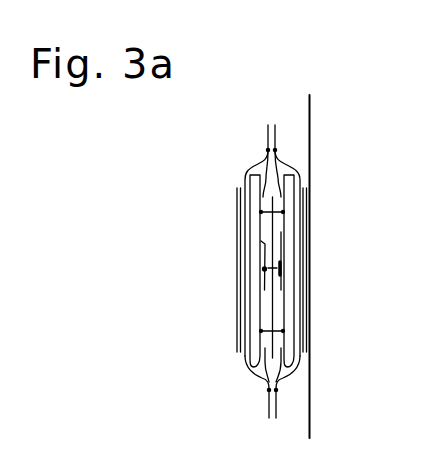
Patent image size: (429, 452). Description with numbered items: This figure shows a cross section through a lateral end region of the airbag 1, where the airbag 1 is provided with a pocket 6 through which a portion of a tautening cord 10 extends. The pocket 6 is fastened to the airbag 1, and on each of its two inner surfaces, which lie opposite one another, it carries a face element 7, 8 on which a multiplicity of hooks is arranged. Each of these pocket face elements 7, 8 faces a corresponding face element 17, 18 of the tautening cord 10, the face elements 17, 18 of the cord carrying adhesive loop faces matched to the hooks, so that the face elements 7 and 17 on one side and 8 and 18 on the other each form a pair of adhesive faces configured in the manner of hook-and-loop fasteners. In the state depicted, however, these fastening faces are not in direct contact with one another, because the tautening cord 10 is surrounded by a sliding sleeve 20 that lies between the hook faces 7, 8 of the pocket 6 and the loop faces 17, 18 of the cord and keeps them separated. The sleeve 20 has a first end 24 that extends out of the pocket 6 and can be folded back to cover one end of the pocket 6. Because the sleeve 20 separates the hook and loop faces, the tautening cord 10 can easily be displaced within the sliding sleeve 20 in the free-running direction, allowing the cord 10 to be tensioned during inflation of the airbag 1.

The airbag 1 is at (311, 142).
The pocket 6 is at (262, 383).
The face element 7 is at (296, 368).
The face element 8 is at (243, 367).
The tautening cord 10 is at (284, 288).
The face element 17 is at (281, 232).
The face element 18 is at (262, 242).
The sliding sleeve 20 is at (270, 172).
The first end 24 is at (240, 293).